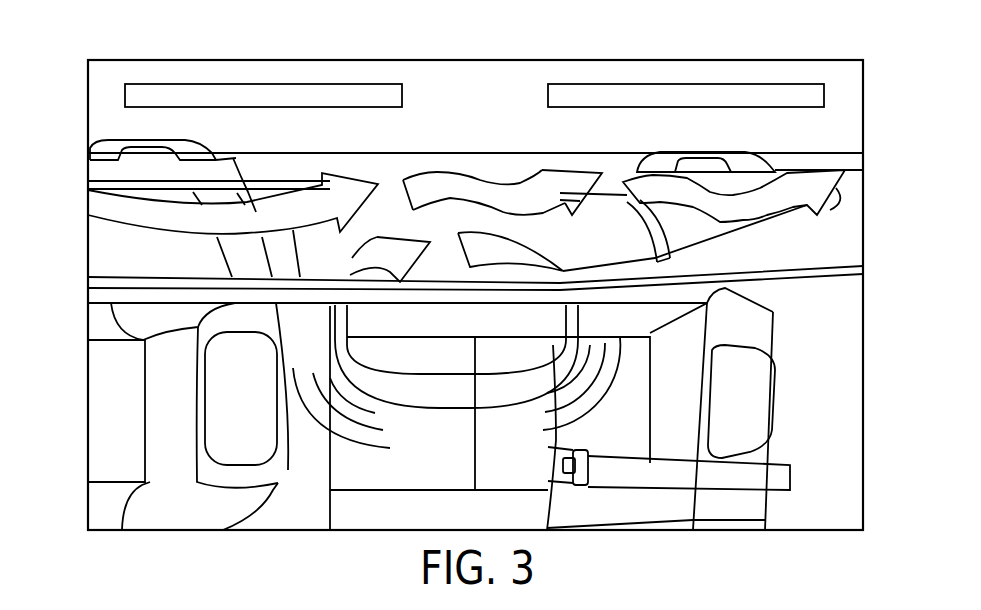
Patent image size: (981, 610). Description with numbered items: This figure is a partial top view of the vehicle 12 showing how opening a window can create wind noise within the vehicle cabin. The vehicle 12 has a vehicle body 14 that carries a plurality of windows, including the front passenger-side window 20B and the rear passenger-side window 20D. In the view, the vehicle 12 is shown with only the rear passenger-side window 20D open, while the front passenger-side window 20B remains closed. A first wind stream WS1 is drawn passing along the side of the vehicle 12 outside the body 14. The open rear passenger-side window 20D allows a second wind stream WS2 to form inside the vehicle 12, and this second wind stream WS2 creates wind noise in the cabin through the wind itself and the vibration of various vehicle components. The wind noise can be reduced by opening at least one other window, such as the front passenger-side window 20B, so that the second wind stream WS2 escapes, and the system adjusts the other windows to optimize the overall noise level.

The front passenger-side window 20B is at (118, 257).
The rear passenger-side window 20D is at (388, 206).
The first wind stream WS1 is at (268, 216).
The second wind stream WS2 is at (495, 382).
The vehicle 12 is at (836, 224).
The vehicle body 14 is at (836, 250).